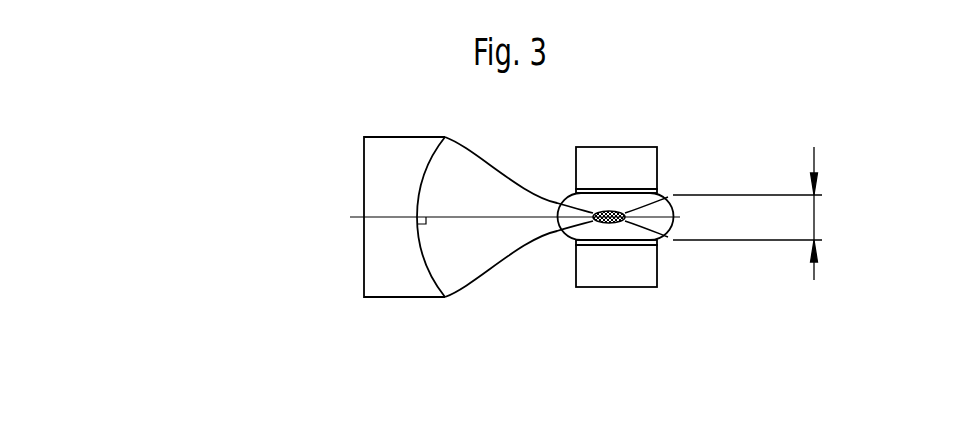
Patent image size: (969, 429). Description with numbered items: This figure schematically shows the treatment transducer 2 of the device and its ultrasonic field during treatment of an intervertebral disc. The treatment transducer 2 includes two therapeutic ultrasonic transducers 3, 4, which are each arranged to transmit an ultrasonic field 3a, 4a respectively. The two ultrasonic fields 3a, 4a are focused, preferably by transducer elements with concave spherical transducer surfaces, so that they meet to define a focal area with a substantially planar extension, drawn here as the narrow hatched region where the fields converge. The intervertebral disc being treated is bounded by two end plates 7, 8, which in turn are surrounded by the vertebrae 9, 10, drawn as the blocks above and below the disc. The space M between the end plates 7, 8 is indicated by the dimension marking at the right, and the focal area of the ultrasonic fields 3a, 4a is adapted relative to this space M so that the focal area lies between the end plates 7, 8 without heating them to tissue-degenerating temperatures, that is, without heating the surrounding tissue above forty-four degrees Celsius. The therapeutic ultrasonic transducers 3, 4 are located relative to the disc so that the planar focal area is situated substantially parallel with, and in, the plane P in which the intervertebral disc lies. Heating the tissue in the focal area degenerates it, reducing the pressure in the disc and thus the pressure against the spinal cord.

The treatment transducer 2 is at (410, 249).
The therapeutic ultrasonic transducer 3 is at (336, 217).
The therapeutic ultrasonic transducer 4 is at (364, 197).
The ultrasonic field 3a is at (519, 264).
The ultrasonic field 4a is at (486, 268).
The end plate 7 is at (622, 190).
The end plate 8 is at (618, 243).
The vertebra 9 is at (603, 157).
The vertebra 10 is at (597, 277).
The space between the end plates M is at (814, 217).
The plane P is at (658, 218).